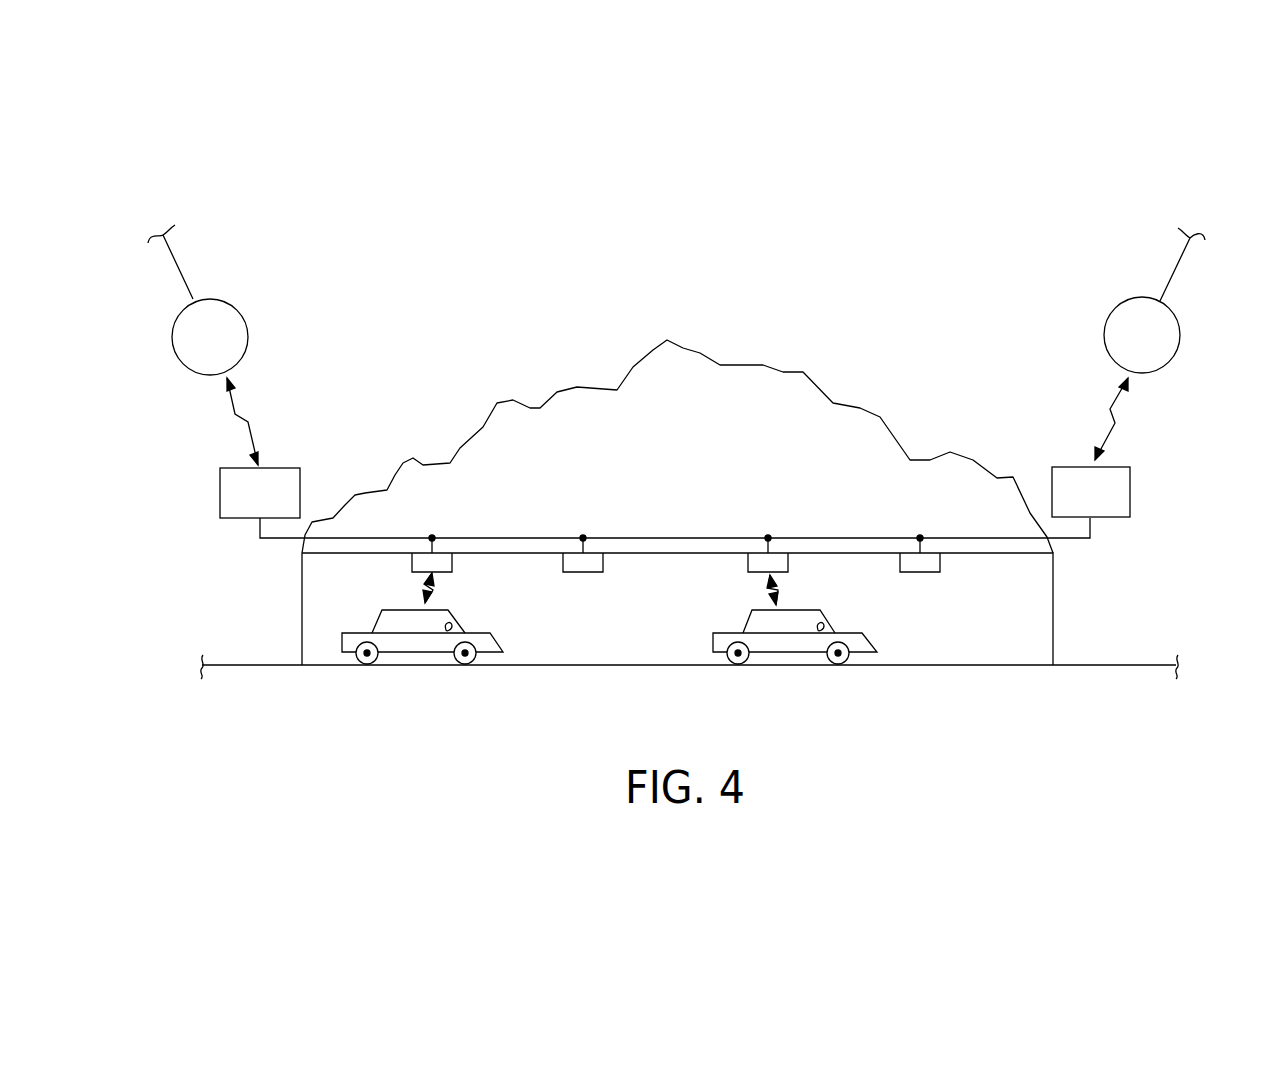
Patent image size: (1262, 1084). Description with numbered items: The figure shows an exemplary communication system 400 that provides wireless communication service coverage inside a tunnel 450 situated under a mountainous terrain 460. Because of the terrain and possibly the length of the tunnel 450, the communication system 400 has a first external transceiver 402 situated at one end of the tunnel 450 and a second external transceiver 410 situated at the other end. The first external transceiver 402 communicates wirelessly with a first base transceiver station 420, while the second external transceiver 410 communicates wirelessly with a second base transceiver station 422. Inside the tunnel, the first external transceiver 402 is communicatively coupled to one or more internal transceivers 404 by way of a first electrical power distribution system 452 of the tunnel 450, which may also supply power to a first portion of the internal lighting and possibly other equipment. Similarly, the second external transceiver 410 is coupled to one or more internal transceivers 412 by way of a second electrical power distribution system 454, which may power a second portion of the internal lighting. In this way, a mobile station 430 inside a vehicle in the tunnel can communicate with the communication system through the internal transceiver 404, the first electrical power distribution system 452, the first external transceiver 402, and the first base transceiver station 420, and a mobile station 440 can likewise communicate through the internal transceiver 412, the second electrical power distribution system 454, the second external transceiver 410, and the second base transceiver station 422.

The communication system 400 is at (925, 372).
The first external transceiver 402 is at (278, 467).
The internal transceiver 404 is at (411, 561).
The second external transceiver 410 is at (1072, 467).
The internal transceiver 412 is at (790, 562).
The first base transceiver station 420 is at (184, 375).
The second base transceiver station 422 is at (1168, 370).
The mobile station 430 is at (417, 665).
The mobile station 440 is at (788, 665).
The tunnel 450 is at (1056, 604).
The first electrical power distribution system 452 is at (506, 537).
The second electrical power distribution system 454 is at (846, 537).
The mountainous terrain 460 is at (763, 364).